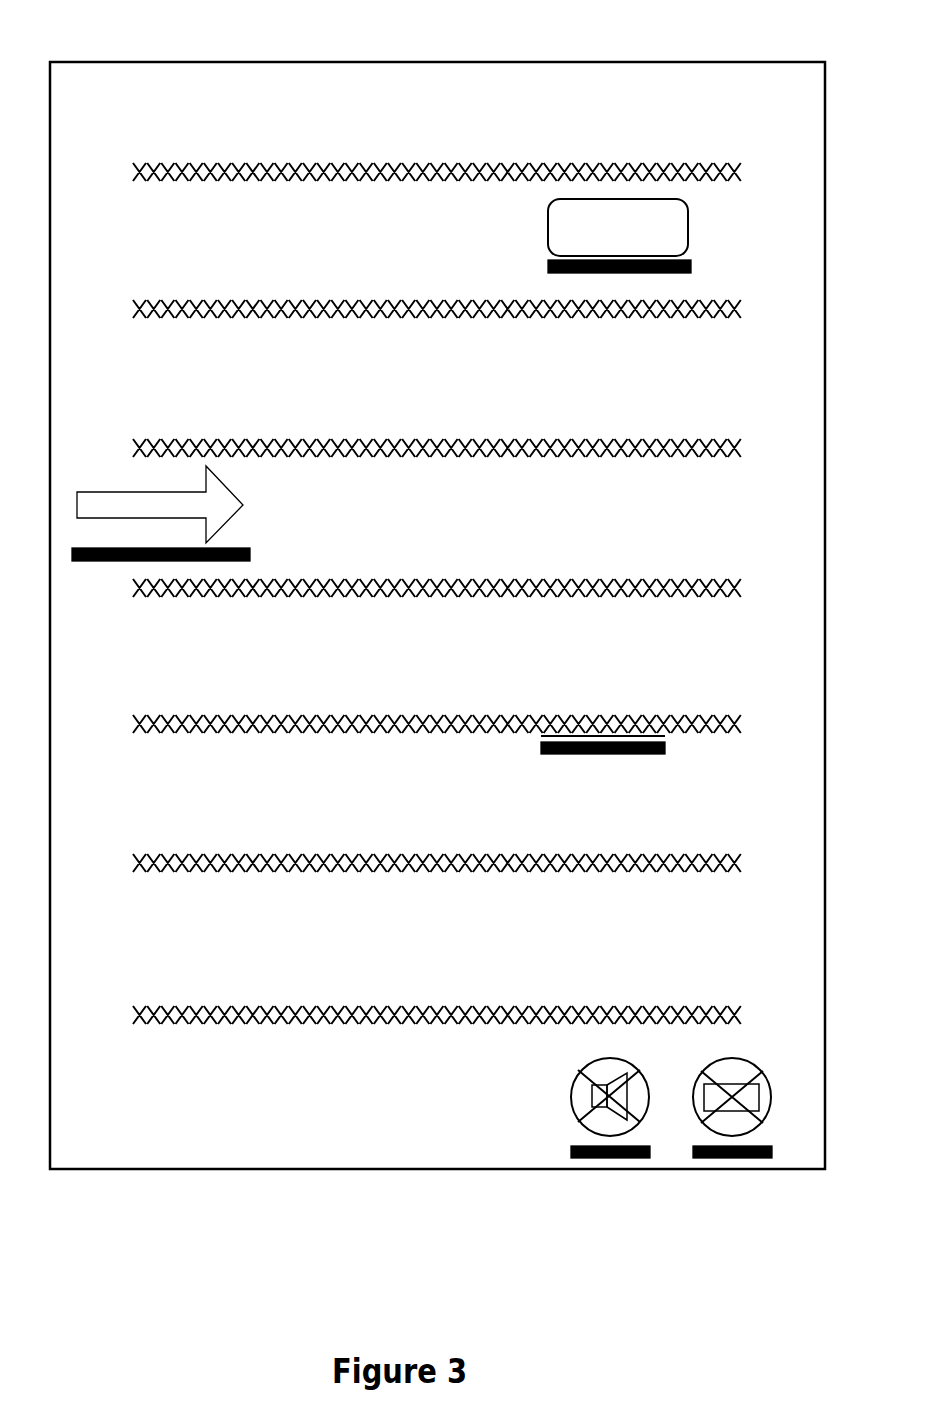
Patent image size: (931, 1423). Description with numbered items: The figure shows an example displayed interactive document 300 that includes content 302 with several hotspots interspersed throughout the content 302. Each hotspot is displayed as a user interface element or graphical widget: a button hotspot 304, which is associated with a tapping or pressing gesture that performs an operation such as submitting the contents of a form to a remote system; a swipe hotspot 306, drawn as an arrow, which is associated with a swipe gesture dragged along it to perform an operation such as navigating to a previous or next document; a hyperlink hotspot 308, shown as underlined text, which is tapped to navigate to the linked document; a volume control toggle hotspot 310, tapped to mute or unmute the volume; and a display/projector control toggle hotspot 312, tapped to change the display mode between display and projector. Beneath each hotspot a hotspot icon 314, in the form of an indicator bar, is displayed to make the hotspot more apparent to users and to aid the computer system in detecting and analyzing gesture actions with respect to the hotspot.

The interactive document 300 is at (132, 62).
The content 302 is at (166, 118).
The button hotspot 304 is at (598, 199).
The swipe hotspot 306 is at (95, 492).
The hyperlink hotspot 308 is at (630, 733).
The volume control toggle hotspot 310 is at (605, 1057).
The display/projector control toggle hotspot 312 is at (728, 1057).
The hotspot icon 314 is at (617, 273).